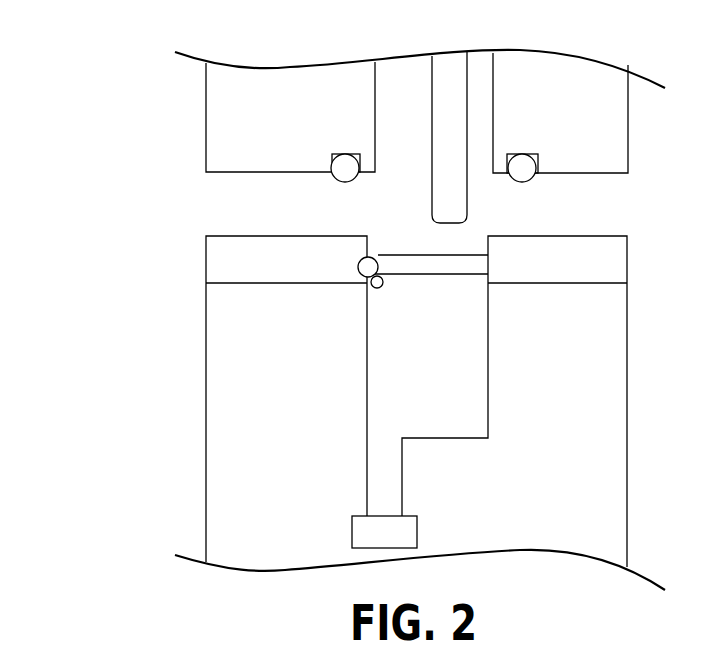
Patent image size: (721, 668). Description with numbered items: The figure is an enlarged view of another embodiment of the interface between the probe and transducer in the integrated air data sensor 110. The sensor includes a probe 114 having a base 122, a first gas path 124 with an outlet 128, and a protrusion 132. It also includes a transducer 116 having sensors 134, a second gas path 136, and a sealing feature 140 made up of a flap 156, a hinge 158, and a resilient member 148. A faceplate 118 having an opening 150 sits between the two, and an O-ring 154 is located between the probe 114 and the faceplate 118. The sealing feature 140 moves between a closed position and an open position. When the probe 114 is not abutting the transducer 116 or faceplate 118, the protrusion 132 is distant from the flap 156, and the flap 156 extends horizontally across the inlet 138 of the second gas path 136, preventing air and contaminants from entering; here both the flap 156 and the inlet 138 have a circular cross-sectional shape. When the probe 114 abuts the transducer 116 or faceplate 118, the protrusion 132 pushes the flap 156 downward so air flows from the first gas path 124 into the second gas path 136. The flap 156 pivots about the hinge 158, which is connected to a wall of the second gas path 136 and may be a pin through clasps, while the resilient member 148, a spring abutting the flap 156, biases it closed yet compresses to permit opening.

The integrated air data sensor 110 is at (75, 168).
The probe 114 is at (170, 105).
The transducer 116 is at (170, 440).
The faceplate 118 is at (170, 270).
The base 122 is at (322, 77).
The first gas path 124 is at (409, 87).
The outlet 128 is at (484, 155).
The protrusion 132 is at (447, 78).
The sensors 134 is at (365, 537).
The second gas path 136 is at (385, 418).
The inlet 138 is at (456, 293).
The sealing feature 140 is at (355, 265).
The resilient member 148 is at (380, 289).
The opening 150 is at (388, 237).
The O-ring 154 is at (345, 167).
The flap 156 is at (468, 262).
The hinge 158 is at (362, 270).